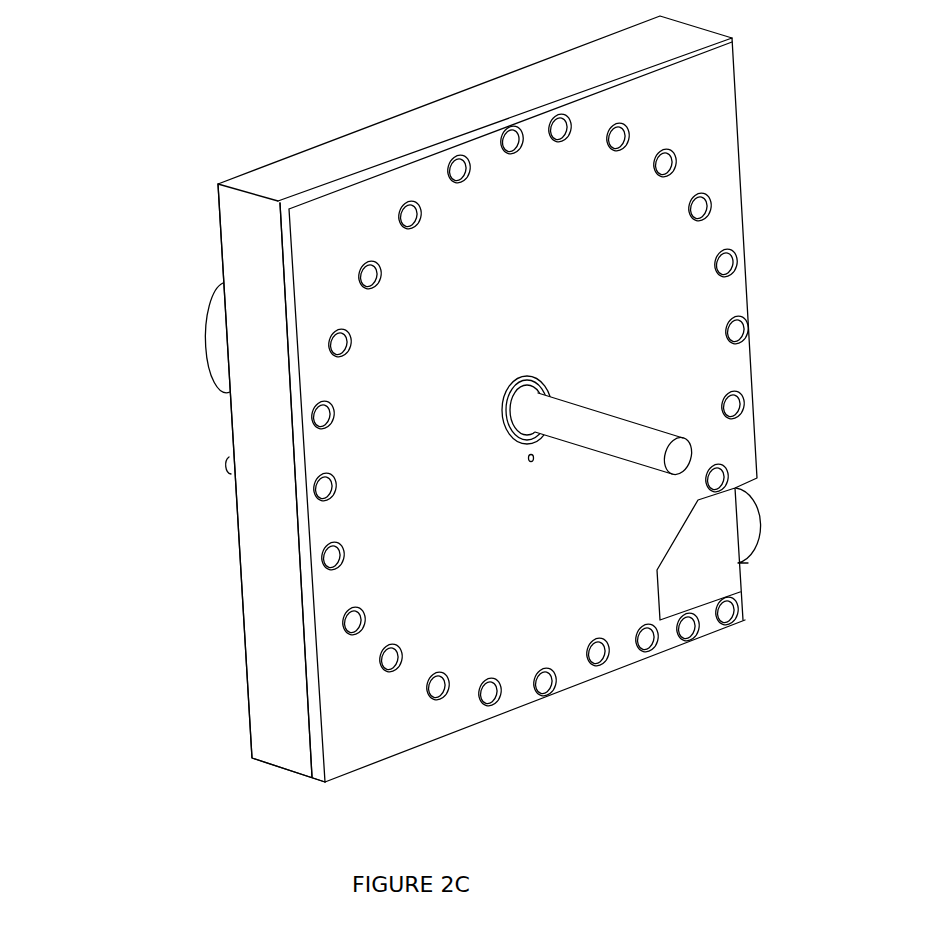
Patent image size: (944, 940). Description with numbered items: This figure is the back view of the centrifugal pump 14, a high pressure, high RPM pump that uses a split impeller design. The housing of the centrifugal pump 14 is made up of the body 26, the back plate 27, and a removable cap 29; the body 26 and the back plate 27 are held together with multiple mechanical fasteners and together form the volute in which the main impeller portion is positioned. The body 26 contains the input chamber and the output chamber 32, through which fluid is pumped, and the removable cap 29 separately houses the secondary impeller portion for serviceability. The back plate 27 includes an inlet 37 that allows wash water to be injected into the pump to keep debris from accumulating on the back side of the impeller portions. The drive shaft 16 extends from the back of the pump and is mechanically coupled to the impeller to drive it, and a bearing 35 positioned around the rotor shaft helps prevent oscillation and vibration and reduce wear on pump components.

The centrifugal pump 14 is at (738, 63).
The back plate 27 is at (710, 138).
The body 26 is at (260, 665).
The removable cap 29 is at (213, 332).
The output chamber 32 is at (752, 540).
The bearing 35 is at (505, 425).
The drive shaft 16 is at (650, 433).
The inlet 37 is at (528, 460).